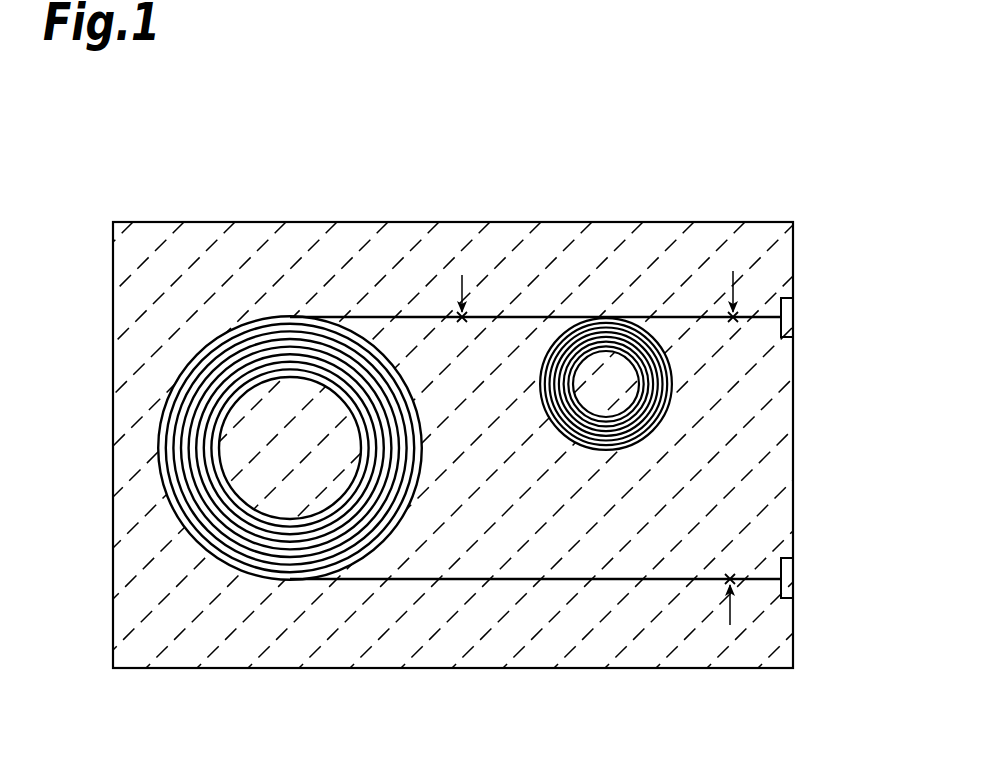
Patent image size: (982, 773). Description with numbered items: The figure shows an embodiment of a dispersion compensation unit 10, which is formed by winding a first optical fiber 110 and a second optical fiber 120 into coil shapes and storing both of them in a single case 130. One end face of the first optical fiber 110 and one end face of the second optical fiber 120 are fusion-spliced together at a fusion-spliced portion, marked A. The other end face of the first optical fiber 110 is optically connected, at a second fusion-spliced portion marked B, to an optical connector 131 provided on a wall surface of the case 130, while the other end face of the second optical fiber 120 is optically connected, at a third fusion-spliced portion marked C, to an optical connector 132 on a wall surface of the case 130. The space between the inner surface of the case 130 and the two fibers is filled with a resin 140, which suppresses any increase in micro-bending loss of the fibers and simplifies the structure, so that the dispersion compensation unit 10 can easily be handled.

The dispersion compensation unit 10 is at (679, 118).
The first optical fiber 110 is at (398, 375).
The second optical fiber 120 is at (663, 418).
The case 130 is at (398, 221).
The optical connector 131 is at (794, 578).
The optical connector 132 is at (794, 317).
The resin 140 is at (202, 239).